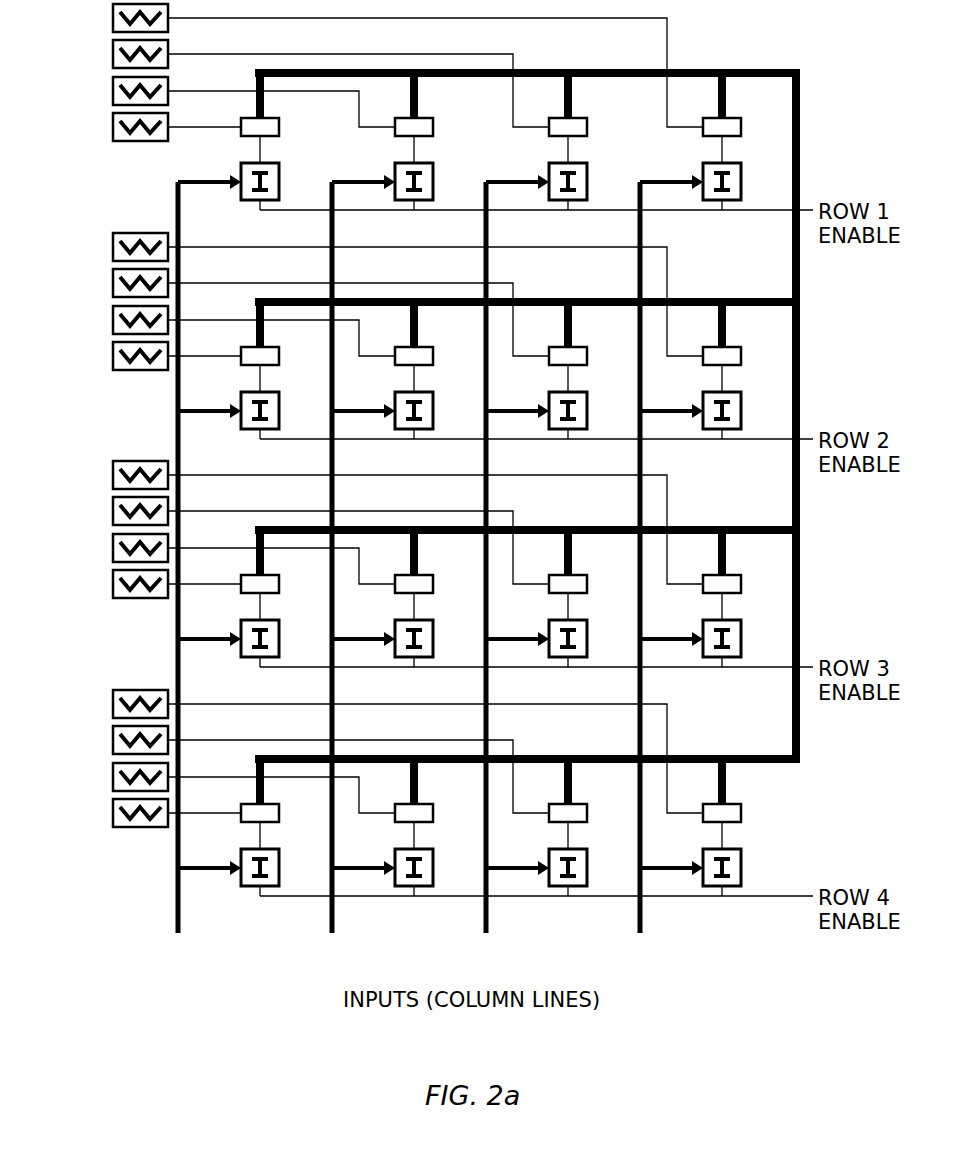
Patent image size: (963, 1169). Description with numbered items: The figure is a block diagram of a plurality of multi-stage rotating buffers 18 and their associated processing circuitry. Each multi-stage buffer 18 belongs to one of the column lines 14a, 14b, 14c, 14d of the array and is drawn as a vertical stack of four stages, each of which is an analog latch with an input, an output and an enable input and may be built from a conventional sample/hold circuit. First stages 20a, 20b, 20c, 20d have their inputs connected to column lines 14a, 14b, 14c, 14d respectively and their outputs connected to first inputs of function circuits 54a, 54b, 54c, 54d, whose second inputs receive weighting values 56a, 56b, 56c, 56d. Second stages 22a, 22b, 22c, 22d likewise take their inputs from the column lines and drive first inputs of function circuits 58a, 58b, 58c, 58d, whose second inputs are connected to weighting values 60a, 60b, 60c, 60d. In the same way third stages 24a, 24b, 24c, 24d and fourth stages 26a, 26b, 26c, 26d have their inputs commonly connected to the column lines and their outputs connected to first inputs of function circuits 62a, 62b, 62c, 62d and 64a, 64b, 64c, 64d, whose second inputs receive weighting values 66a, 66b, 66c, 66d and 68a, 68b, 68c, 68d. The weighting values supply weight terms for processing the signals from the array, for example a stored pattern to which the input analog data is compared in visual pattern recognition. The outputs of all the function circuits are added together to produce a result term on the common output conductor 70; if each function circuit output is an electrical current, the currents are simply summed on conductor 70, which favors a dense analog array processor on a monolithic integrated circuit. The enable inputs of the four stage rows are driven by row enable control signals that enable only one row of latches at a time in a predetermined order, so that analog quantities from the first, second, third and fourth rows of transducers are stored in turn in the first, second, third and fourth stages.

The column line 14a is at (181, 913).
The column line 14b is at (335, 913).
The column line 14c is at (489, 913).
The column line 14d is at (643, 913).
The multi-stage buffer 18 is at (261, 914).
The first stage 20a is at (252, 849).
The first stage 20b is at (406, 849).
The first stage 20c is at (560, 849).
The first stage 20d is at (714, 849).
The second stage 22a is at (252, 620).
The second stage 22b is at (406, 620).
The second stage 22c is at (560, 620).
The second stage 22d is at (714, 620).
The third stage 24a is at (252, 392).
The third stage 24b is at (406, 392).
The third stage 24c is at (560, 392).
The third stage 24d is at (714, 392).
The fourth stage 26a is at (252, 163).
The fourth stage 26b is at (406, 163).
The fourth stage 26c is at (560, 163).
The fourth stage 26d is at (714, 163).
The function circuit 54a is at (279, 813).
The function circuit 54b is at (433, 813).
The function circuit 54c is at (587, 813).
The function circuit 54d is at (741, 813).
The weighting value 56a is at (113, 810).
The weighting value 56b is at (113, 774).
The weighting value 56c is at (113, 737).
The weighting value 56d is at (113, 701).
The function circuit 58a is at (279, 584).
The function circuit 58b is at (433, 584).
The function circuit 58c is at (587, 584).
The function circuit 58d is at (741, 584).
The weighting value 60a is at (113, 581).
The weighting value 60b is at (113, 545).
The weighting value 60c is at (113, 508).
The weighting value 60d is at (113, 472).
The function circuit 62a is at (279, 356).
The function circuit 62b is at (433, 356).
The function circuit 62c is at (587, 356).
The function circuit 62d is at (741, 356).
The function circuit 64a is at (279, 127).
The function circuit 64b is at (433, 127).
The function circuit 64c is at (587, 127).
The function circuit 64d is at (741, 127).
The weighting value 66a is at (113, 353).
The weighting value 66b is at (113, 317).
The weighting value 66c is at (113, 280).
The weighting value 66d is at (113, 244).
The weighting value 68a is at (113, 124).
The weighting value 68b is at (113, 88).
The weighting value 68c is at (113, 51).
The weighting value 68d is at (113, 15).
The common output conductor 70 is at (800, 352).